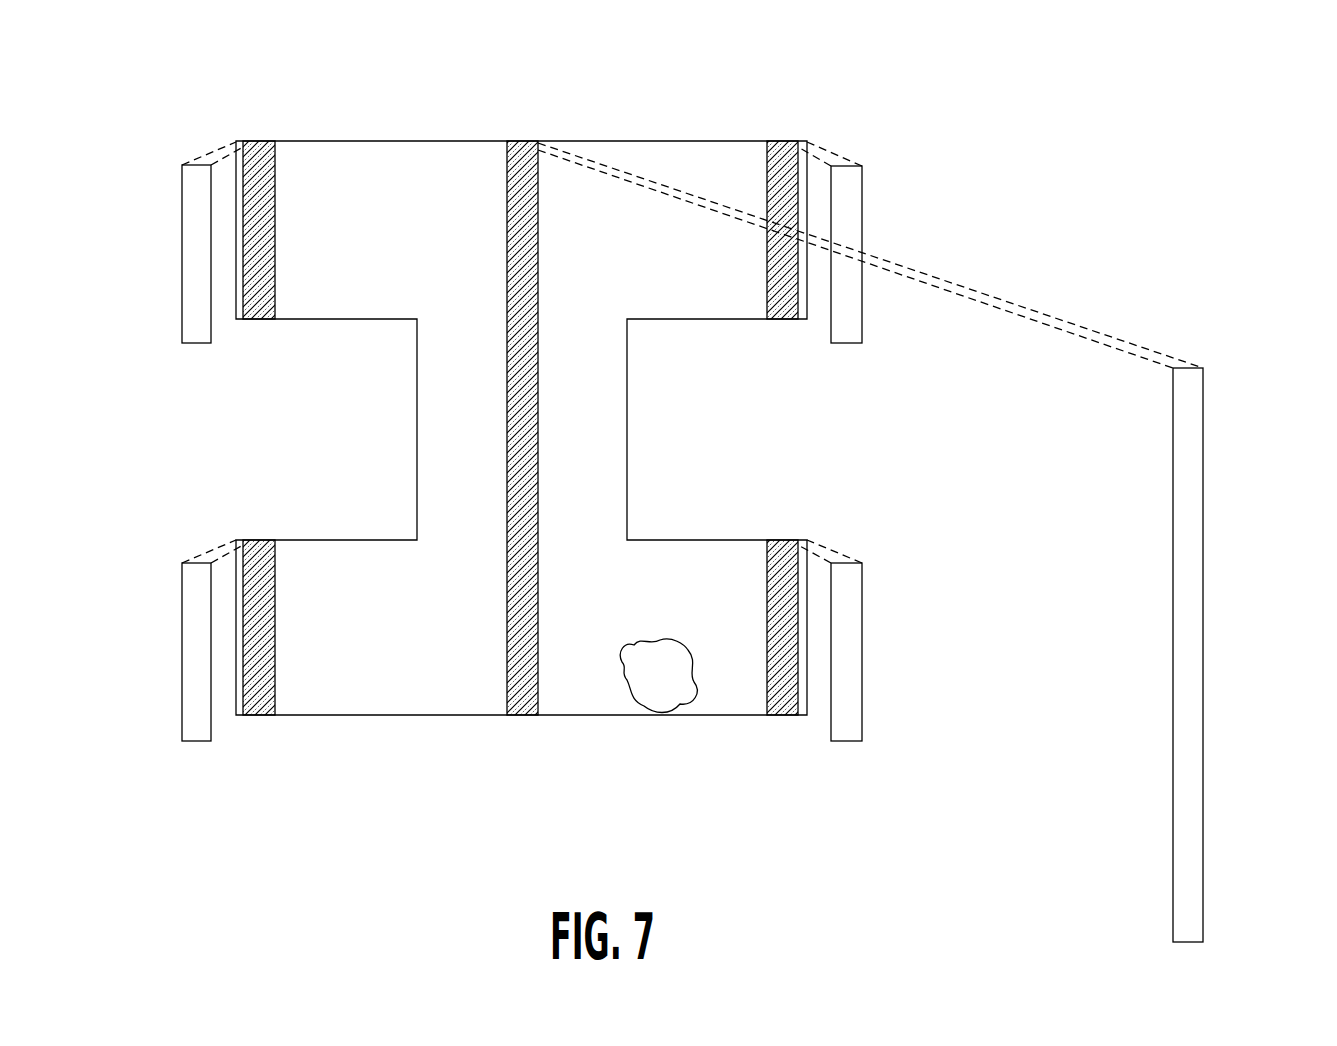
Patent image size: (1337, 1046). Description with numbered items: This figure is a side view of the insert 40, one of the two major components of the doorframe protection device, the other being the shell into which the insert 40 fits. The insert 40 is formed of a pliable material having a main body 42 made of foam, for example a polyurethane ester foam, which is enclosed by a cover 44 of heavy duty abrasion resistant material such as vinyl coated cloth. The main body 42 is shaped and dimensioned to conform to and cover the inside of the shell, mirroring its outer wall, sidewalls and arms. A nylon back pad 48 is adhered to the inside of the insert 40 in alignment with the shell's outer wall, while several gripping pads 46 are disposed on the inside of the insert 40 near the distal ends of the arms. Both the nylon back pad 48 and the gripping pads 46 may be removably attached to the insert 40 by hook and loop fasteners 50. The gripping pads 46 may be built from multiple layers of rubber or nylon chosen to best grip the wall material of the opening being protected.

The insert 40 is at (674, 136).
The main body 42 is at (668, 687).
The cover 44 is at (745, 612).
The gripping pads 46 is at (182, 202).
The nylon back pad 48 is at (1203, 730).
The hook and loop fasteners 50 is at (530, 717).